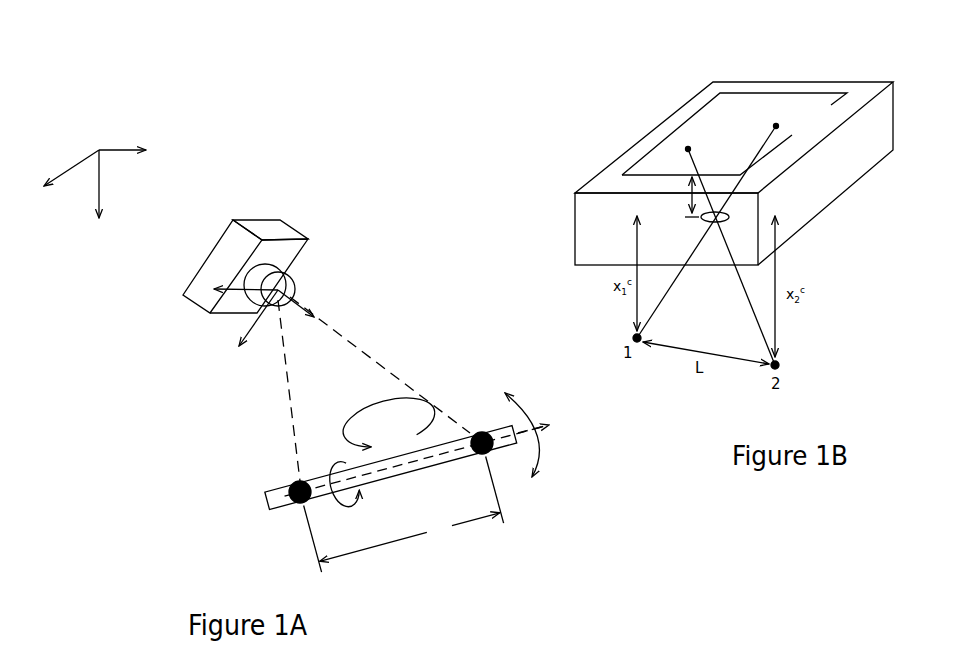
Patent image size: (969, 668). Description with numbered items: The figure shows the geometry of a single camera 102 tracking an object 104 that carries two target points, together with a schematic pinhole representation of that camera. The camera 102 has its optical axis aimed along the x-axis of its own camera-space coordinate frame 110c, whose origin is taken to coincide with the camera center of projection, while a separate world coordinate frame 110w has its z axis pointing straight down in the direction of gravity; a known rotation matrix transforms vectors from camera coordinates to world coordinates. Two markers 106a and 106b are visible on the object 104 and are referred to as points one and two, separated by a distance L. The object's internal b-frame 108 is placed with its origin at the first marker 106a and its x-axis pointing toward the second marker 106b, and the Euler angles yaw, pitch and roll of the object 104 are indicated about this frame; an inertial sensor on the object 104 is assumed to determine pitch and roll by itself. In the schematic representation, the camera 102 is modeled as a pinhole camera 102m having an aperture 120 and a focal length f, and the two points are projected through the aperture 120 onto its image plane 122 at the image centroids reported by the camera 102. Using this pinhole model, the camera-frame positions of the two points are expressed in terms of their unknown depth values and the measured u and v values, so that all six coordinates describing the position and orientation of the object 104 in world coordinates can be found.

In FIG. 1A, the camera 102 is at (285, 226).
In FIG. 1A, the world coordinate frame 110w is at (99, 158).
In FIG. 1A, the camera coordinate frame 110c is at (243, 334).
In FIG. 1A, the tracked object 104 is at (432, 468).
In FIG. 1A, the first marker 106a is at (298, 482).
In FIG. 1A, the second marker 106b is at (481, 431).
In FIG. 1A, the body coordinate frame 108 is at (540, 430).
In FIG. 1B, the pinhole camera 102m is at (583, 238).
In FIG. 1B, the image plane 122 is at (722, 118).
In FIG. 1B, the aperture 120 is at (733, 216).